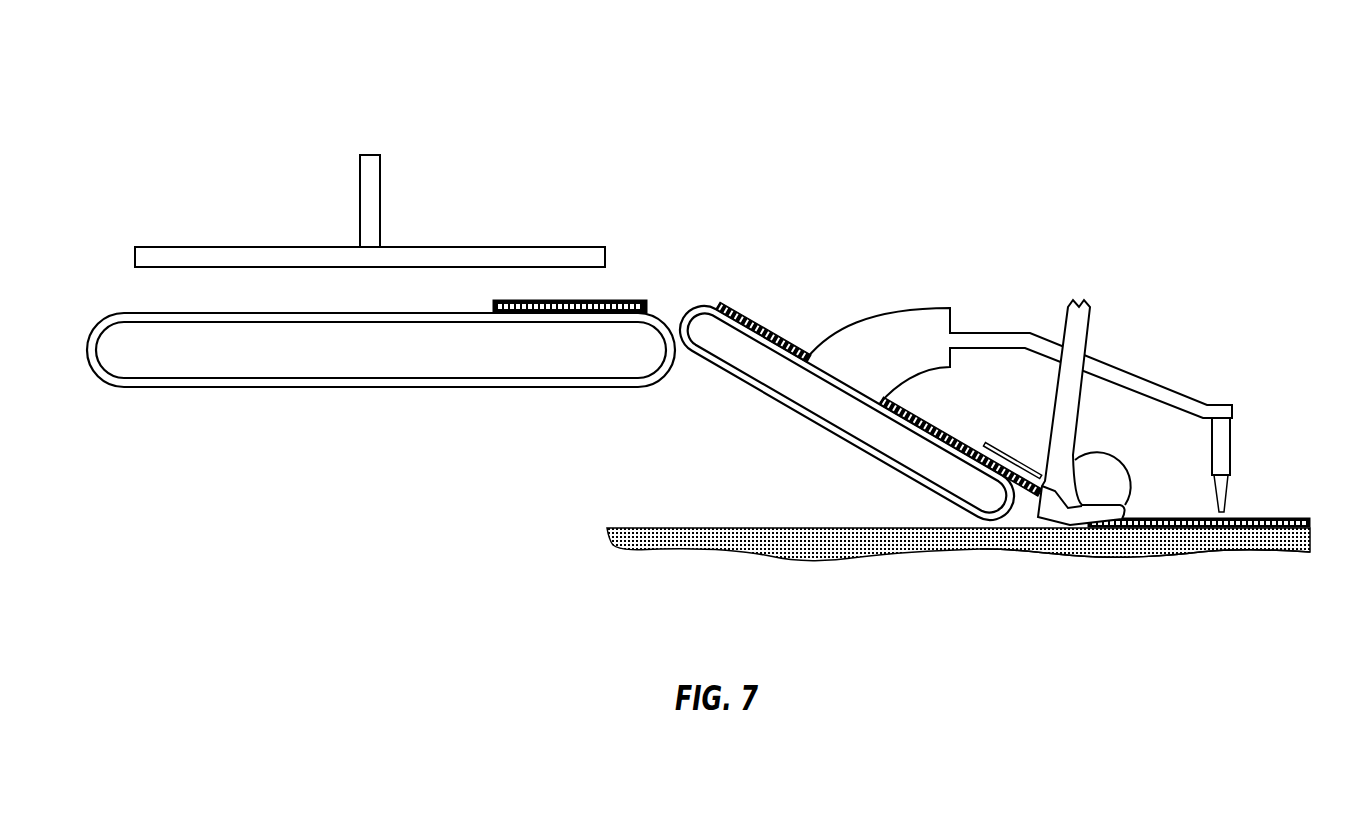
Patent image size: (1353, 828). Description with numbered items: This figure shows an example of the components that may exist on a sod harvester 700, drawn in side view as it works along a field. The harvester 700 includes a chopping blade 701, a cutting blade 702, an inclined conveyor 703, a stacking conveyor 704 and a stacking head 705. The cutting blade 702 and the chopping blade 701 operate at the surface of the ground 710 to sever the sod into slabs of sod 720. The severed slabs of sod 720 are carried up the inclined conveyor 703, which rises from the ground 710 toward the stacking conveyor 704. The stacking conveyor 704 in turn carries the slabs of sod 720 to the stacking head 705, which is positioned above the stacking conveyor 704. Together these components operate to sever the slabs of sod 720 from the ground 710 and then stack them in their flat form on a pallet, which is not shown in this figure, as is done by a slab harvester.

The harvester 700 is at (737, 53).
The chopping blade 701 is at (1230, 504).
The cutting blade 702 is at (1105, 562).
The inclined conveyor 703 is at (742, 388).
The stacking conveyor 704 is at (245, 388).
The stacking head 705 is at (360, 190).
The ground 710 is at (608, 532).
The slabs of sod 720 is at (647, 296).